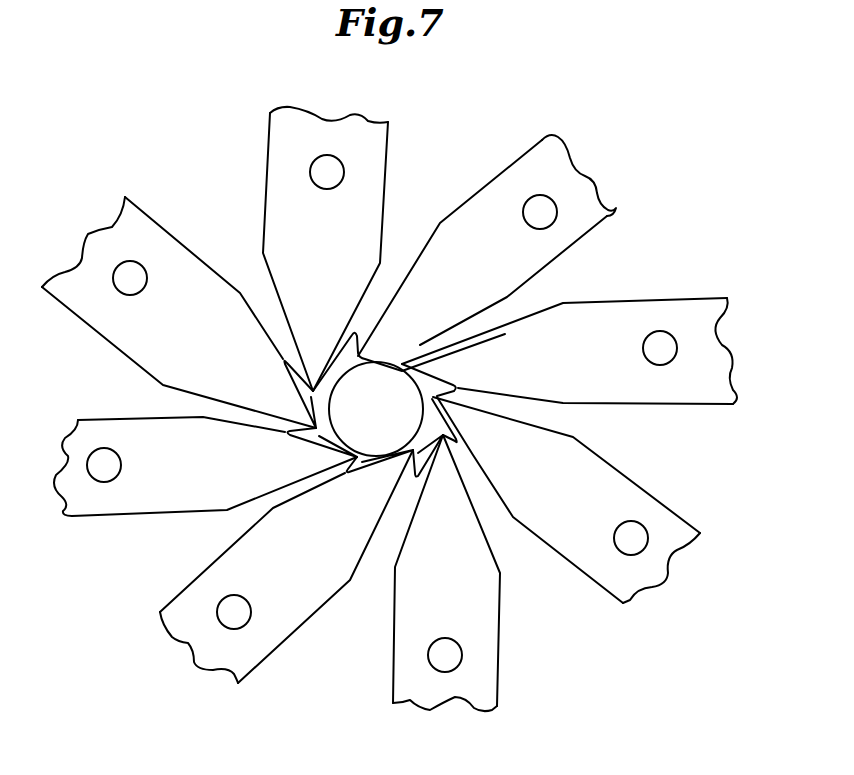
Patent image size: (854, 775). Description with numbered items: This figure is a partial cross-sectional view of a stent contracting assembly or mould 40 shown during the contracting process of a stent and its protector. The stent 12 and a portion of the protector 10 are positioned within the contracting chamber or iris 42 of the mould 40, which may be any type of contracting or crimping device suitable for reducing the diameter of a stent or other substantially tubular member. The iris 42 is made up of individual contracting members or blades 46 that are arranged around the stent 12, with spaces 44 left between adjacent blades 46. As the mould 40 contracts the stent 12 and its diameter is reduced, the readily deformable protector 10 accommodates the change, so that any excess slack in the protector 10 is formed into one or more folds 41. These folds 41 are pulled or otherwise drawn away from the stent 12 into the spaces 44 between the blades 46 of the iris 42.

The protector 10 is at (378, 502).
The stent 12 is at (402, 400).
The mould 40 is at (655, 198).
The folds 41 is at (490, 322).
The iris 42 is at (334, 332).
The spaces 44 is at (386, 300).
The blades 46 is at (476, 599).